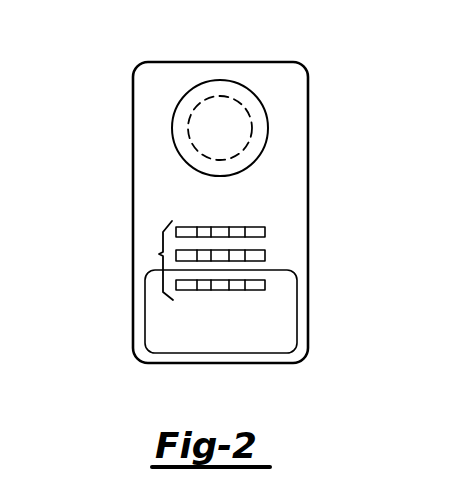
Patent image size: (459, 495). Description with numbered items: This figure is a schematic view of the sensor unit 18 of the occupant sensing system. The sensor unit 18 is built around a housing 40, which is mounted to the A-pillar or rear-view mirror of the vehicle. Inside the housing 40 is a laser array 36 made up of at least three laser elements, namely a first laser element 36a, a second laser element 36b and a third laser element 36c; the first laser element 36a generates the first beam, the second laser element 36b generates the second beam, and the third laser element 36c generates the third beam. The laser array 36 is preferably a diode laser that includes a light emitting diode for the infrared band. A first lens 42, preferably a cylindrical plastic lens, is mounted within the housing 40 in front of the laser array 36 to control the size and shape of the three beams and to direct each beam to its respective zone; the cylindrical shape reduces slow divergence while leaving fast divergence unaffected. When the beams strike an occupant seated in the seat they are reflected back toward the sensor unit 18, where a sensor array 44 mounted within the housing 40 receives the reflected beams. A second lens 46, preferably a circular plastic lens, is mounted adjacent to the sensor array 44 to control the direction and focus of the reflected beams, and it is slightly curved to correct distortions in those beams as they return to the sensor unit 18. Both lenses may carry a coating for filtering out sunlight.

The sensor unit 18 is at (106, 165).
The housing 40 is at (308, 134).
The second lens 46 is at (190, 90).
The sensor array 44 is at (243, 92).
The first lens 42 is at (296, 346).
The laser array 36 is at (159, 254).
The first laser element 36a is at (266, 232).
The second laser element 36b is at (266, 258).
The third laser element 36c is at (262, 288).